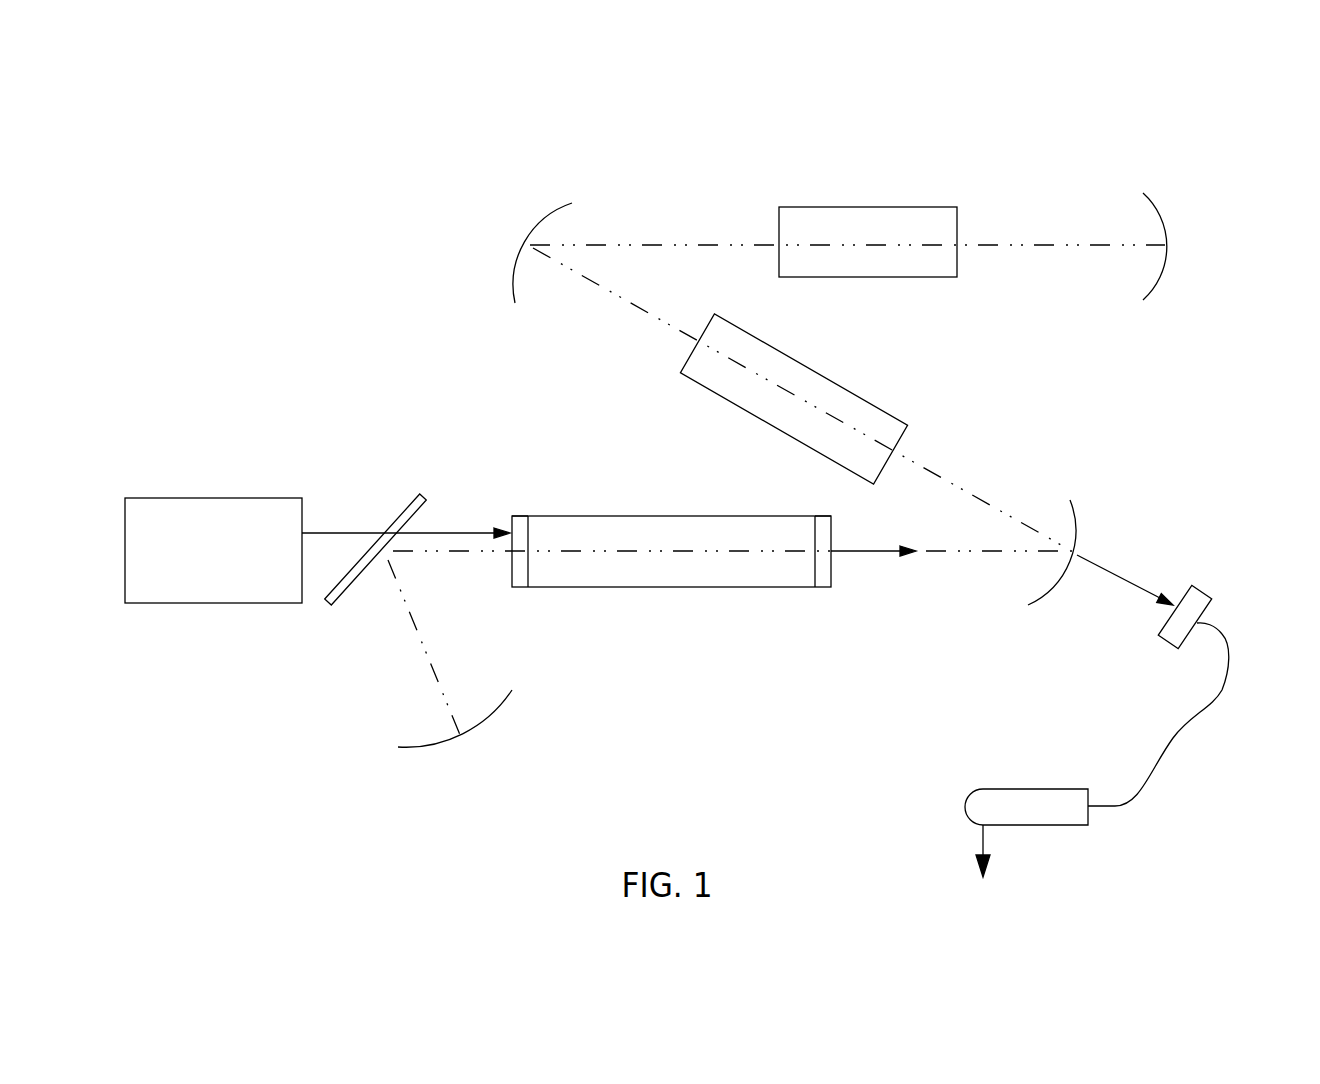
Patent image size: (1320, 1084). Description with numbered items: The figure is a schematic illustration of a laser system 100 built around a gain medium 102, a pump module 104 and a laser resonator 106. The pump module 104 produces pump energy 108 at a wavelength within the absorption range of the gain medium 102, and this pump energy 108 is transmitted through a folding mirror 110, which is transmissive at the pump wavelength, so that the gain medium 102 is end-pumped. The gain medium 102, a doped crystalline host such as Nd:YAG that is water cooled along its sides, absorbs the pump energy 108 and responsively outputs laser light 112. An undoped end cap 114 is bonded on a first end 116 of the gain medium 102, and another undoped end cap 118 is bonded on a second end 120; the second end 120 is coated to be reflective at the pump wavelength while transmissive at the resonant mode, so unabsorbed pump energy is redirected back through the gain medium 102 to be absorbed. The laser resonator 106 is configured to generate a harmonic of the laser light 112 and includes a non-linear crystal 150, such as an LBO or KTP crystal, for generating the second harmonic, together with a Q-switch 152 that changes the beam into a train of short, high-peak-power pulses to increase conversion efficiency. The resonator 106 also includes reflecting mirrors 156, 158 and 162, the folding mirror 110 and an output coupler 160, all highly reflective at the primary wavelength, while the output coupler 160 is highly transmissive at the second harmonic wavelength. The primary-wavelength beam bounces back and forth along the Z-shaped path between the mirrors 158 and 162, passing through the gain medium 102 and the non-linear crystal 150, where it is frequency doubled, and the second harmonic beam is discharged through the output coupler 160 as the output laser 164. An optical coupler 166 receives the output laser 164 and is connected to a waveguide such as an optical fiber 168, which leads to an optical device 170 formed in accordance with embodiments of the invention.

The laser system 100 is at (302, 167).
The gain medium 102 is at (689, 516).
The pump module 104 is at (197, 498).
The laser resonator 106 is at (454, 327).
The pump energy 108 is at (468, 530).
The folding mirror 110 is at (408, 500).
The laser light 112 is at (905, 562).
The undoped end cap 114 is at (520, 588).
The first end 116 is at (520, 516).
The undoped end cap 118 is at (822, 588).
The second end 120 is at (823, 516).
The non-linear crystal 150 is at (850, 207).
The Q-switch 152 is at (873, 400).
The reflecting mirror 156 is at (546, 218).
The reflecting mirror 158 is at (1157, 285).
The output coupler 160 is at (1044, 594).
The reflecting mirror 162 is at (495, 715).
The output laser 164 is at (1117, 573).
The optical coupler 166 is at (1200, 588).
The optical fiber 168 is at (1207, 710).
The optical device 170 is at (1030, 825).